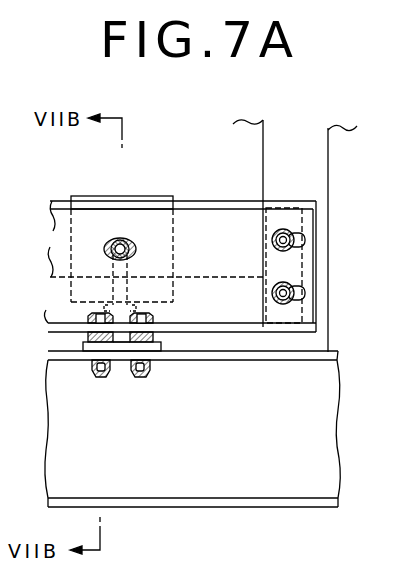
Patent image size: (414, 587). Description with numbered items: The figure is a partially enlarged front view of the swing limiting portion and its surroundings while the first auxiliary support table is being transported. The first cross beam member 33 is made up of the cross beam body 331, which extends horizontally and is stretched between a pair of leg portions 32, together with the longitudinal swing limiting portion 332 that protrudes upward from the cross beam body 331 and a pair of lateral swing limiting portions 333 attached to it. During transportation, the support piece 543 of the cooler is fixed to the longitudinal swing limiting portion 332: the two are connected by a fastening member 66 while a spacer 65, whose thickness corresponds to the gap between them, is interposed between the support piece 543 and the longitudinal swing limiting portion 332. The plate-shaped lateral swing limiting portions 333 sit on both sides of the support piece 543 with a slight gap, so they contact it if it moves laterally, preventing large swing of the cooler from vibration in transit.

The leg portion 32 is at (328, 190).
The first cross beam member 33 is at (193, 403).
The spacer 65 is at (148, 196).
The fastening member 66 is at (132, 234).
The cross beam body 331 is at (190, 428).
The longitudinal swing limiting portion 332 is at (222, 333).
The lateral swing limiting portion 333 is at (303, 257).
The support piece 543 is at (265, 146).